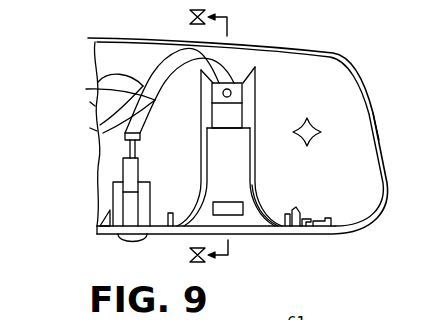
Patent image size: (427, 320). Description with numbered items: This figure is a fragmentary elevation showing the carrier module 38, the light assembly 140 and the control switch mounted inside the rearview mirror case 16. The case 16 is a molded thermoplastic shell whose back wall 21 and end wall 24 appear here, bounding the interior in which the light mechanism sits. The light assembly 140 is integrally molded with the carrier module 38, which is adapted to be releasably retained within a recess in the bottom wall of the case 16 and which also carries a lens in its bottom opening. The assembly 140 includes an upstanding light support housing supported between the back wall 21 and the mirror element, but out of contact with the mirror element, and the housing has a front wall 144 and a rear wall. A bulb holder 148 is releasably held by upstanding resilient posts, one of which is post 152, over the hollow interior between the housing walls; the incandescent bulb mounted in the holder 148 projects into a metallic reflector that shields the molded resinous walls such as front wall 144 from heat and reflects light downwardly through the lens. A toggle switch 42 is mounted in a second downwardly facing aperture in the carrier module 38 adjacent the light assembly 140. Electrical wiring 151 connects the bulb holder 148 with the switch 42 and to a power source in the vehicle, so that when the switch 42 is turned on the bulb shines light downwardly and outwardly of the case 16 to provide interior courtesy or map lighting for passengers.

The mirror case 16 is at (338, 56).
The end wall 24 is at (378, 116).
The back wall 21 is at (341, 167).
The carrier module 38 is at (286, 234).
The toggle switch 42 is at (152, 184).
The electrical wiring 151 is at (98, 83).
The resilient post 152 is at (196, 106).
The light assembly 140 is at (256, 131).
The front wall 144 is at (252, 185).
The bulb holder 148 is at (241, 85).